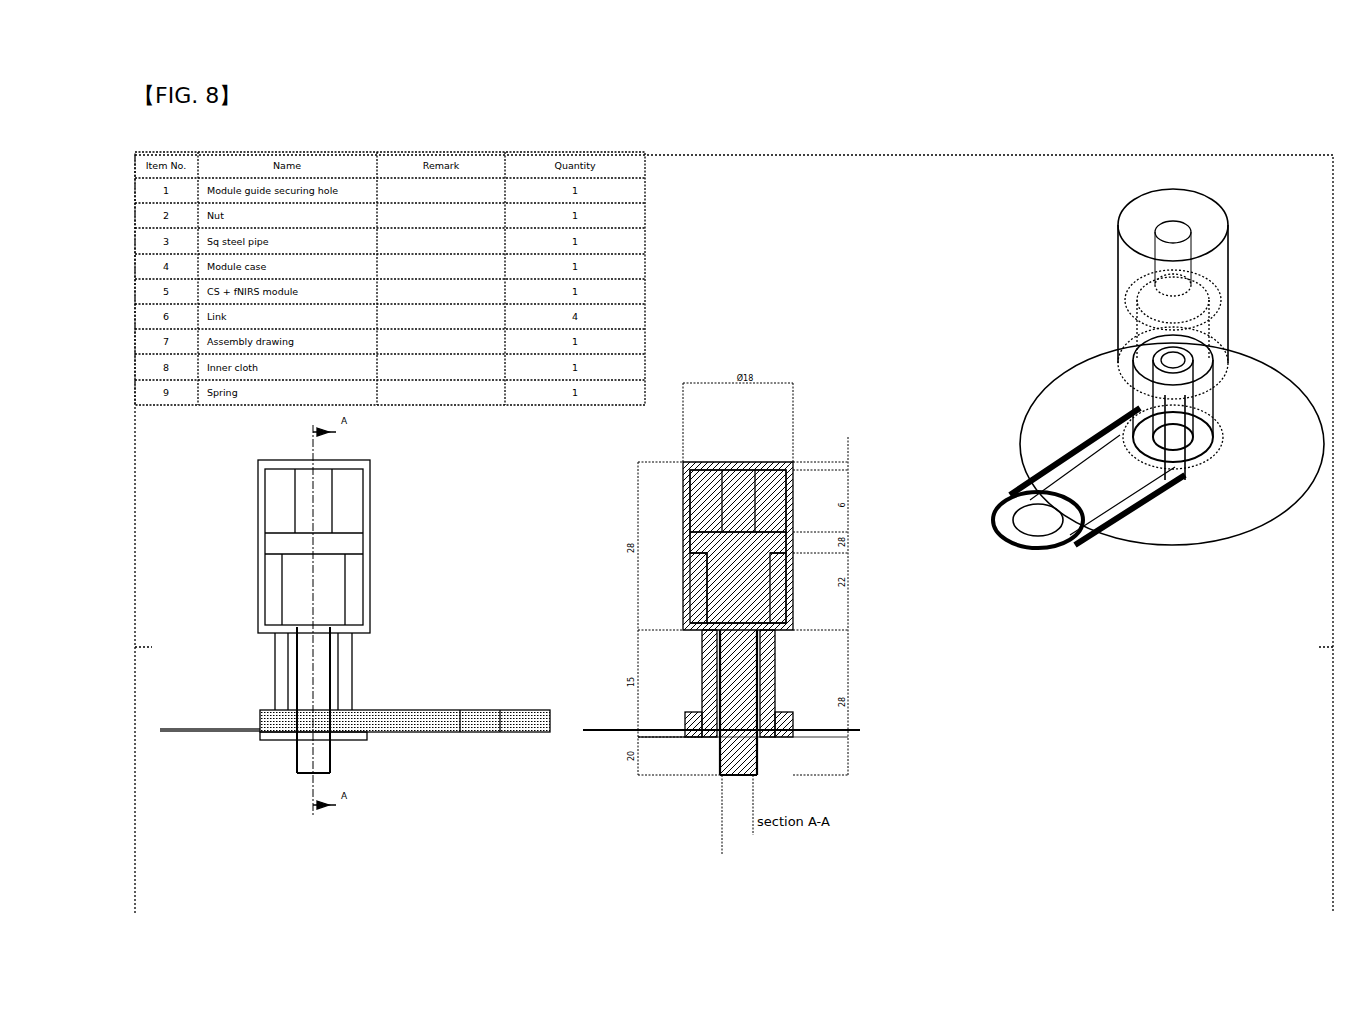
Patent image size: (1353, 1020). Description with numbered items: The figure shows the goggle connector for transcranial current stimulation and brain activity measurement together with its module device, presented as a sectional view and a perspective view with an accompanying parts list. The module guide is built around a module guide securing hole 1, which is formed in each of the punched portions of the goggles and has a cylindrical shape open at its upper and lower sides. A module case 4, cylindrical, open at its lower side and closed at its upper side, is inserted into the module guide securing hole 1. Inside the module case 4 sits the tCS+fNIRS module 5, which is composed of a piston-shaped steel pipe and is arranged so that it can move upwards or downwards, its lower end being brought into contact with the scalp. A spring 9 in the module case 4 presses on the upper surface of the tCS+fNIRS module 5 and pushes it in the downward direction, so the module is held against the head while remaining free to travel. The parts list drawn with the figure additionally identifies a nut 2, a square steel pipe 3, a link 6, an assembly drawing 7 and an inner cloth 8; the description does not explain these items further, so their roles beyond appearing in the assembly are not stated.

The module guide securing hole 1 is at (700, 741).
The Nut 2 is at (739, 724).
The Sq steel pipe 3 is at (717, 778).
The module case 4 is at (737, 460).
The tCS+fNIRS module 5 is at (738, 780).
The Link 6 is at (690, 731).
The Assembly drawing 7 is at (1158, 368).
The Inner cloth 8 is at (583, 730).
The spring 9 is at (756, 499).